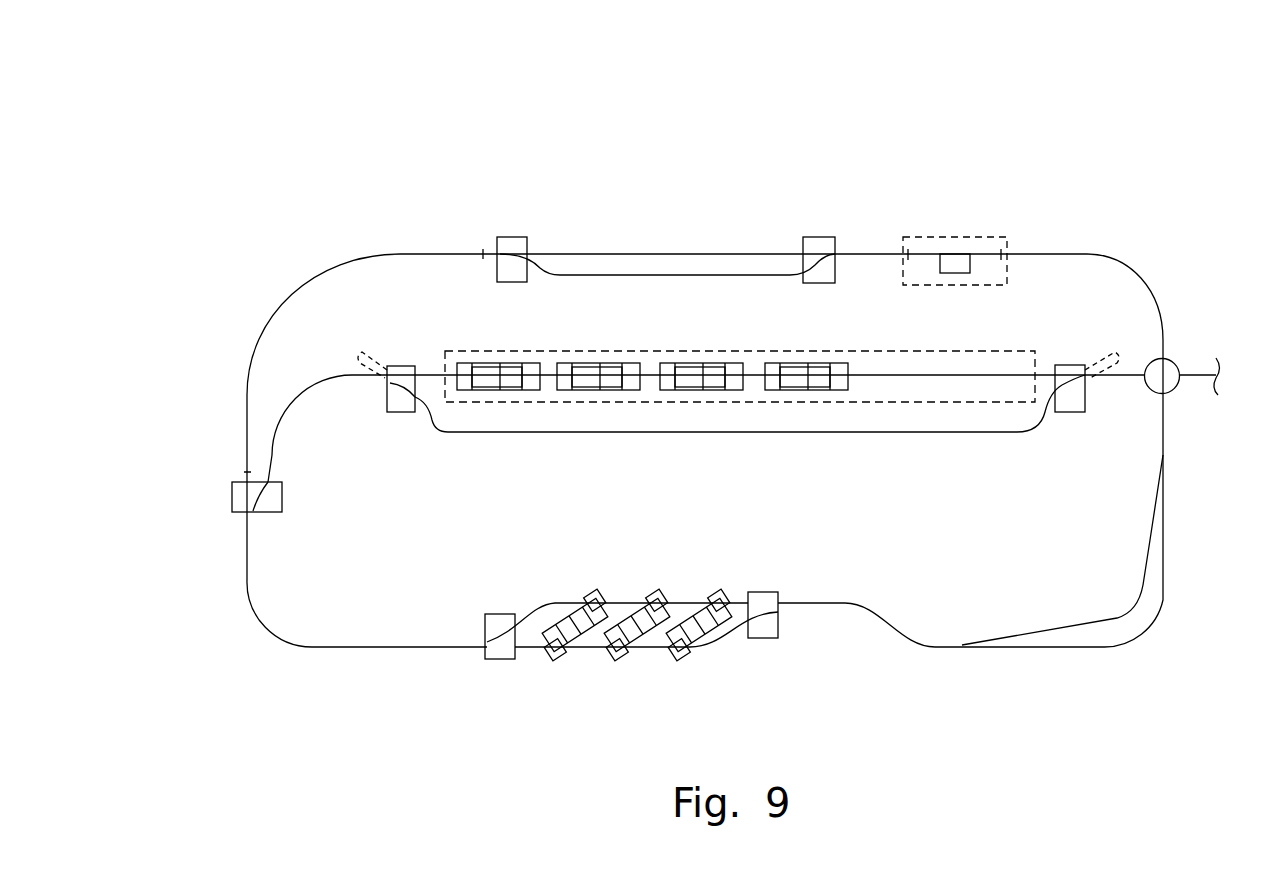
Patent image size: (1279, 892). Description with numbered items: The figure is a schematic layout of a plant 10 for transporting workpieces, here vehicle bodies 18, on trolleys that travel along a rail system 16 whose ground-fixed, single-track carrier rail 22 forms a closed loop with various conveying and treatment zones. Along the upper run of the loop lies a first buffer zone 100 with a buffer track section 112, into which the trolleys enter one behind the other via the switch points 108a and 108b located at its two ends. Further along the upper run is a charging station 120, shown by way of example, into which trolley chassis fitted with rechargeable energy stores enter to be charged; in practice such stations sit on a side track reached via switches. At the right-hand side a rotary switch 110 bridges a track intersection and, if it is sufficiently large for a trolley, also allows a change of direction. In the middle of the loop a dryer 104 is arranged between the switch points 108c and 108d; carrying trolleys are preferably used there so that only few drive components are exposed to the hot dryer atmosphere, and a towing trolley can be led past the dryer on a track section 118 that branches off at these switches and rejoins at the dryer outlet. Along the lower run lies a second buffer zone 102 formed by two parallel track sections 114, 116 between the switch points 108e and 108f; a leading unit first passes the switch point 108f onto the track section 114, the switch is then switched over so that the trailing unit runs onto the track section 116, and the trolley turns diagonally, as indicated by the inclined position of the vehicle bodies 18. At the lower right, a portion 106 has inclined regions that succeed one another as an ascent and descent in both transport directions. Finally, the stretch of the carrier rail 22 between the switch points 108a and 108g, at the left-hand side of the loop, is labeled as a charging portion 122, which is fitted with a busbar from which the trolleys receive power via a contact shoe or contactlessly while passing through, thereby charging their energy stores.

The plant 10 is at (1080, 103).
The rail system 16 is at (247, 325).
The vehicle bodies 18 is at (818, 372).
The carrier rail 22 is at (351, 252).
The buffer zone 100 is at (711, 240).
The buffer zone 102 is at (525, 678).
The dryer 104 is at (1018, 349).
The portion having inclined regions 106 is at (1110, 606).
The switch point 108a is at (495, 258).
The switch point 108b is at (840, 240).
The switch point 108c is at (377, 414).
The switch point 108d is at (1070, 414).
The switch point 108e is at (483, 628).
The switch point 108f is at (785, 640).
The switch point 108g is at (270, 514).
The rotary switch 110 is at (1173, 360).
The buffer track section 112 is at (633, 278).
The track section 114 is at (647, 652).
The track section 116 is at (622, 600).
The track section 118 is at (778, 434).
The charging station 120 is at (963, 238).
The charging portion 122 is at (300, 290).